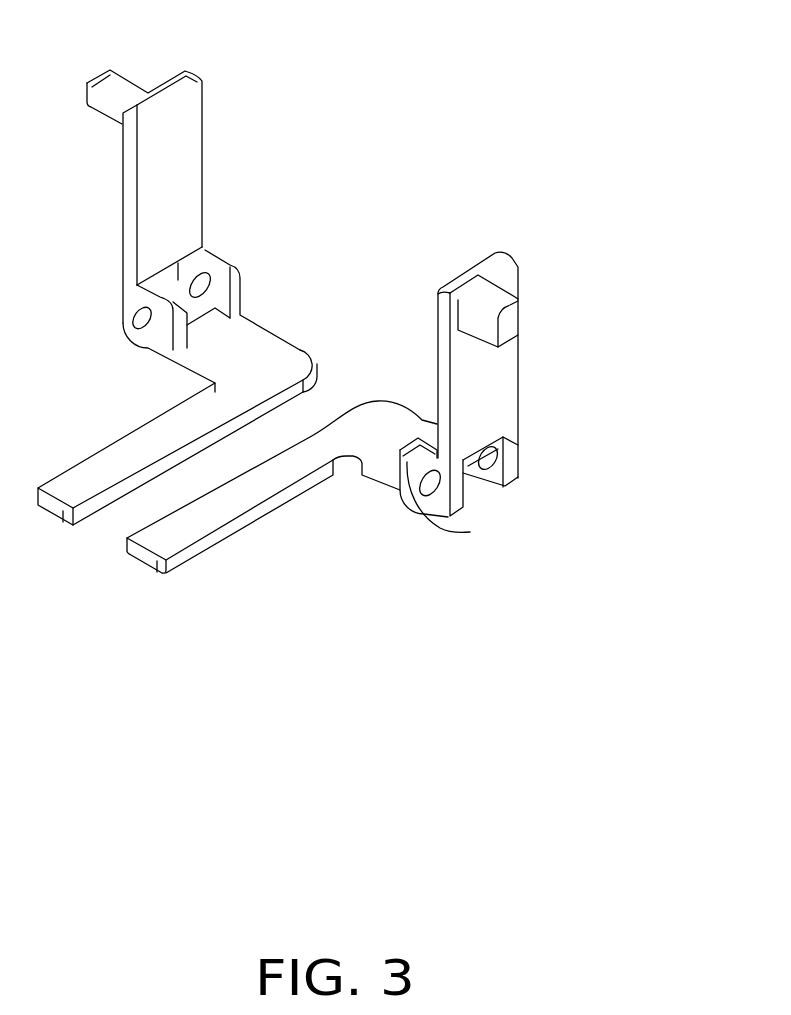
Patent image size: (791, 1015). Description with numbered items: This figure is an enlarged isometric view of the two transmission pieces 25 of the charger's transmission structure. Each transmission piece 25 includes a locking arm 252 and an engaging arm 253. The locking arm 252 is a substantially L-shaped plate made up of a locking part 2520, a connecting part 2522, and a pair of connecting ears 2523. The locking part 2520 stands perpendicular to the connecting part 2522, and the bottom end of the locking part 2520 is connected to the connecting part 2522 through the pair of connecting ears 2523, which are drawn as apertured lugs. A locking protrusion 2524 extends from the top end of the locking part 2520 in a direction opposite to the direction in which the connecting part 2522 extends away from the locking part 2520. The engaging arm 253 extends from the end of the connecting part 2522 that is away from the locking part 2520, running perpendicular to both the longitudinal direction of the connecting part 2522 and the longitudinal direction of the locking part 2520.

The transmission piece 25 is at (396, 70).
The locking arm 252 is at (660, 383).
The locking part 2520 is at (483, 382).
The connecting part 2522 is at (392, 425).
The connecting ear 2523 is at (470, 532).
The locking protrusion 2524 is at (487, 322).
The engaging arm 253 is at (220, 513).